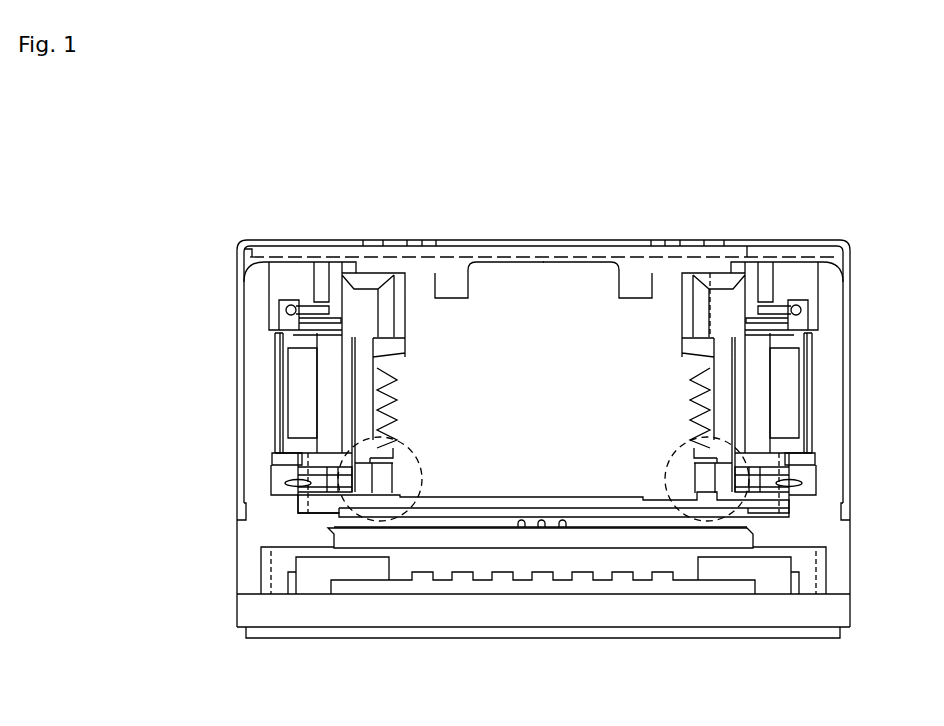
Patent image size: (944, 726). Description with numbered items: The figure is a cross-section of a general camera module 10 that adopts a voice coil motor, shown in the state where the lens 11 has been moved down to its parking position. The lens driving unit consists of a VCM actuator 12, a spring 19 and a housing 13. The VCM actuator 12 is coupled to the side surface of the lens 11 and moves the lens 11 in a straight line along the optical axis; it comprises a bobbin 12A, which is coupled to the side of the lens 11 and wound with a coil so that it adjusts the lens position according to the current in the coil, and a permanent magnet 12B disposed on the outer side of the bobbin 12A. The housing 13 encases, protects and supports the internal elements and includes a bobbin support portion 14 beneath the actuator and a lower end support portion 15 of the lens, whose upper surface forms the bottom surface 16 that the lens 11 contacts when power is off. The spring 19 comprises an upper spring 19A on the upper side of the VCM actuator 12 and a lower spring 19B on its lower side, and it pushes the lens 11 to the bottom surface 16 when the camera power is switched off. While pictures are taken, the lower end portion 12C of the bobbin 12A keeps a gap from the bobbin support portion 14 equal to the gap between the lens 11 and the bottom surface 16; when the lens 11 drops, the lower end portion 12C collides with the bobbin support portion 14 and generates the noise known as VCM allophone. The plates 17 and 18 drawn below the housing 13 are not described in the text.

The camera module 10 is at (822, 156).
The lens 11 is at (573, 280).
The VCM actuator 12 is at (476, 391).
The bobbin 12A is at (330, 365).
The permanent magnet 12B is at (305, 397).
The lower end portion of the bobbin 12C is at (375, 475).
The housing 13 is at (292, 536).
The bobbin support portion 14 is at (329, 513).
The lower end support portion of the lens 15 is at (493, 500).
The bottom surface 16 is at (438, 500).
The circuit board 17 is at (752, 528).
The bottom plate 18 is at (740, 590).
The spring 19 is at (423, 387).
The upper spring 19A is at (285, 312).
The lower spring 19B is at (340, 483).